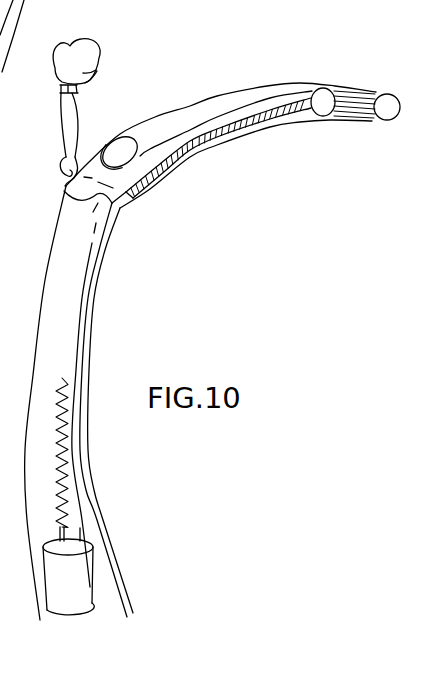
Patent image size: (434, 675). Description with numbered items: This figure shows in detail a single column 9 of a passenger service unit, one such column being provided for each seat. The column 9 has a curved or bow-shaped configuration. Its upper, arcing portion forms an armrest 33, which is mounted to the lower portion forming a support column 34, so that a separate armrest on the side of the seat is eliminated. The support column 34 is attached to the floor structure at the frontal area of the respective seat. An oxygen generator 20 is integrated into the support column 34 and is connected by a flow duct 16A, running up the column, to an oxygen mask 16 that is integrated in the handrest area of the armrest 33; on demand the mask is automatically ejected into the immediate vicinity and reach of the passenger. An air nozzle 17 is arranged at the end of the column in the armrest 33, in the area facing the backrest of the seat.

The column 9 is at (264, 173).
The oxygen mask 16 is at (90, 52).
The flow duct 16A is at (87, 113).
The air nozzle 17 is at (388, 95).
The oxygen generator 20 is at (87, 563).
The armrest 33 is at (288, 84).
The support column 34 is at (100, 258).